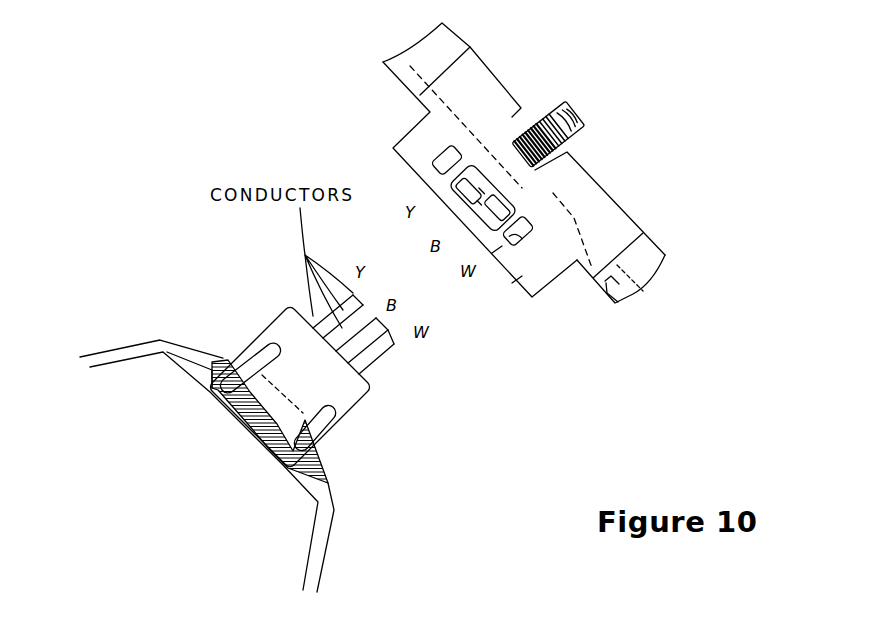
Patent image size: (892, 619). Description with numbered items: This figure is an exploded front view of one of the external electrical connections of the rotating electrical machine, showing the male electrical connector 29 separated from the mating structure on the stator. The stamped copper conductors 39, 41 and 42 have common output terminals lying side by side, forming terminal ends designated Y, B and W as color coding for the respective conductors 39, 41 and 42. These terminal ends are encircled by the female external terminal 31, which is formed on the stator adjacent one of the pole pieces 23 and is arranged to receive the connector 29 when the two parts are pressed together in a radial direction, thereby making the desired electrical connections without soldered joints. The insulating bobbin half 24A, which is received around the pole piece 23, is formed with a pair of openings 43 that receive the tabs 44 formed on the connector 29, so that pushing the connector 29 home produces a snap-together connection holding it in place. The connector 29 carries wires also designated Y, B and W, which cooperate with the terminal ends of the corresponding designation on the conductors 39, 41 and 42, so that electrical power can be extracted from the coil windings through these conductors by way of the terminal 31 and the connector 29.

The pole pieces 23 is at (578, 112).
The bobbin half 24A is at (656, 248).
The male electrical connector 29 is at (372, 388).
The female external terminal 31 is at (393, 148).
The conductor 39 is at (443, 93).
The conductor 41 is at (573, 237).
The conductor 42 is at (604, 300).
The openings 43 is at (402, 133).
The tabs 44 is at (243, 340).